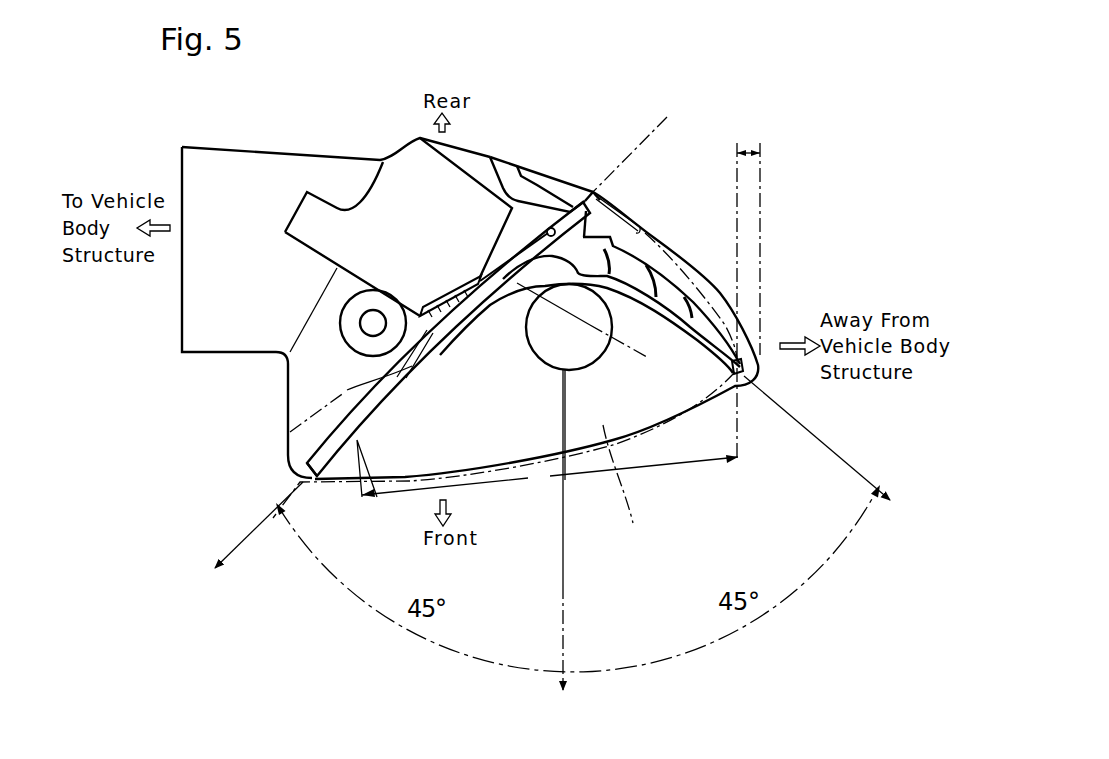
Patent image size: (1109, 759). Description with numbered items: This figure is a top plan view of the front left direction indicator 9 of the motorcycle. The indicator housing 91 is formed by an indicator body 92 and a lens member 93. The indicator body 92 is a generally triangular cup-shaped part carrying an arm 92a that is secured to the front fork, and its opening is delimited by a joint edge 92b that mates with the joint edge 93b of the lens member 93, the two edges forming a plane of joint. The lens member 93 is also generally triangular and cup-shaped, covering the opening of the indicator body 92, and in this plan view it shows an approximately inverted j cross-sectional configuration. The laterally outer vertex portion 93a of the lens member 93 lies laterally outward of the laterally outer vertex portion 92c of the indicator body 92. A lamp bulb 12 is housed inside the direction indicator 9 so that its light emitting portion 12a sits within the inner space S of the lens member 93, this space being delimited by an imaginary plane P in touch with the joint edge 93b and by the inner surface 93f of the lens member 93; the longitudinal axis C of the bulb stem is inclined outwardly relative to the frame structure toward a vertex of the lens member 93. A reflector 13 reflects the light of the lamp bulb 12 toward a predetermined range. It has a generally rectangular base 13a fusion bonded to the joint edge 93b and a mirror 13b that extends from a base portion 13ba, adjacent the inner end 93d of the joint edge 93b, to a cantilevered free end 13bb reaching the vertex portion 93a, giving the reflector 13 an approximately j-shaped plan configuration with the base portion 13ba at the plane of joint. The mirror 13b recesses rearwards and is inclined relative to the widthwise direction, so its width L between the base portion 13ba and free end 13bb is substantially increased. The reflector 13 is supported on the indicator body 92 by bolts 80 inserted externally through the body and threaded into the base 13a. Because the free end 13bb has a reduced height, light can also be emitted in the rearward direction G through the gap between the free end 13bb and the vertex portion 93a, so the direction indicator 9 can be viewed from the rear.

The direction indicator 9 is at (268, 394).
The lamp bulb 12 is at (526, 324).
The light emitting portion 12a is at (551, 368).
The reflector 13 is at (442, 360).
The base 13a is at (335, 478).
The mirror 13b is at (396, 408).
The base portion 13ba is at (377, 497).
The free end 13bb is at (738, 377).
The bolts 80 is at (373, 300).
The indicator housing 91 is at (499, 299).
The indicator body 92 is at (542, 136).
The arm 92a is at (238, 167).
The joint edge 92b is at (517, 166).
The laterally outer vertex portion 92c is at (594, 192).
The lens member 93 is at (499, 320).
The laterally outer vertex portion 93a is at (752, 368).
The joint edge 93b is at (285, 440).
The inner end 93d is at (277, 478).
The inner surface 93f is at (643, 224).
The imaginary plane P is at (658, 120).
The rearward direction G is at (760, 150).
The longitudinal axis C is at (647, 358).
The width L is at (550, 476).
The inner space S is at (624, 489).